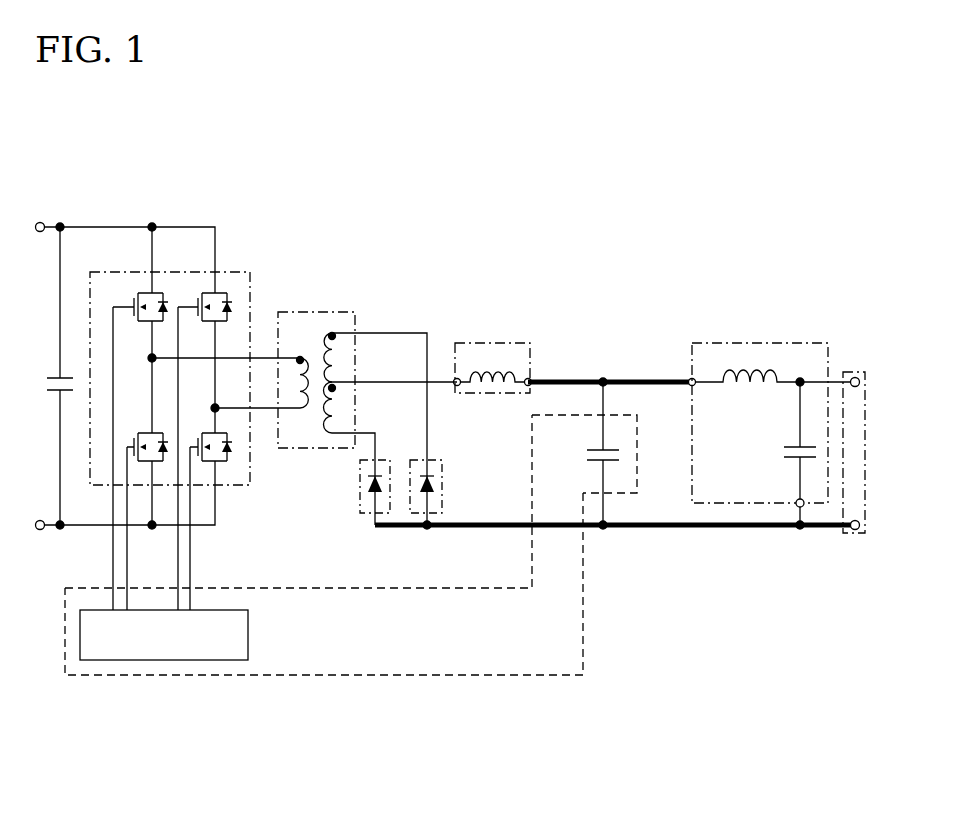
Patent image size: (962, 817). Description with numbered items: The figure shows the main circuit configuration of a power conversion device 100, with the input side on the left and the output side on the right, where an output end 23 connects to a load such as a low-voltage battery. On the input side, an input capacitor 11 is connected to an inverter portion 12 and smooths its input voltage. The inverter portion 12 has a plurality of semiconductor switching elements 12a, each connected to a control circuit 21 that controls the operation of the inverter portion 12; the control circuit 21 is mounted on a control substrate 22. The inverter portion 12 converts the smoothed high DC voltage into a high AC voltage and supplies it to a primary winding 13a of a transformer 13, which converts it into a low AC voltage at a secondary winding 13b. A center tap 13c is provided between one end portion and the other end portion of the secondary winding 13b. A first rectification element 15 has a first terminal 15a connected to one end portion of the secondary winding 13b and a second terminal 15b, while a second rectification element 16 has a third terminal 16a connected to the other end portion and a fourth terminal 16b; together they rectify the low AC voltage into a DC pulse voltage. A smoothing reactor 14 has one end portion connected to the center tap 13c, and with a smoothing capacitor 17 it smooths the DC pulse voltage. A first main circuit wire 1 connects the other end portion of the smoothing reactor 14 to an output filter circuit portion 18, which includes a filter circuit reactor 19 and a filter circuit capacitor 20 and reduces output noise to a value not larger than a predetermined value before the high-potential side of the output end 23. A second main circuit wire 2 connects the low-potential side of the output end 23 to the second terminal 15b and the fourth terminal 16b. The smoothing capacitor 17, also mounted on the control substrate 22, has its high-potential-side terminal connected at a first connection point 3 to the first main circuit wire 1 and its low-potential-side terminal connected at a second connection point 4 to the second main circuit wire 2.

The power conversion device 100 is at (540, 178).
The first main circuit wire 1 is at (663, 380).
The second main circuit wire 2 is at (658, 527).
The first connection point 3 is at (592, 393).
The second connection point 4 is at (605, 527).
The input capacitor 11 is at (60, 376).
The inverter portion 12 is at (166, 371).
The semiconductor switching element 12a is at (140, 282).
The transformer 13 is at (304, 357).
The primary winding 13a is at (283, 340).
The secondary winding 13b is at (345, 330).
The center tap 13c is at (349, 382).
The smoothing reactor 14 is at (507, 343).
The first rectification element 15 is at (365, 603).
The first terminal 15a is at (362, 458).
The second terminal 15b is at (362, 508).
The second rectification element 16 is at (469, 586).
The third terminal 16a is at (420, 458).
The fourth terminal 16b is at (428, 512).
The smoothing capacitor 17 is at (597, 447).
The output filter circuit portion 18 is at (778, 404).
The filter circuit reactor 19 is at (750, 387).
The filter circuit capacitor 20 is at (792, 463).
The control circuit 21 is at (250, 648).
The control substrate 22 is at (324, 591).
The output end 23 is at (850, 372).